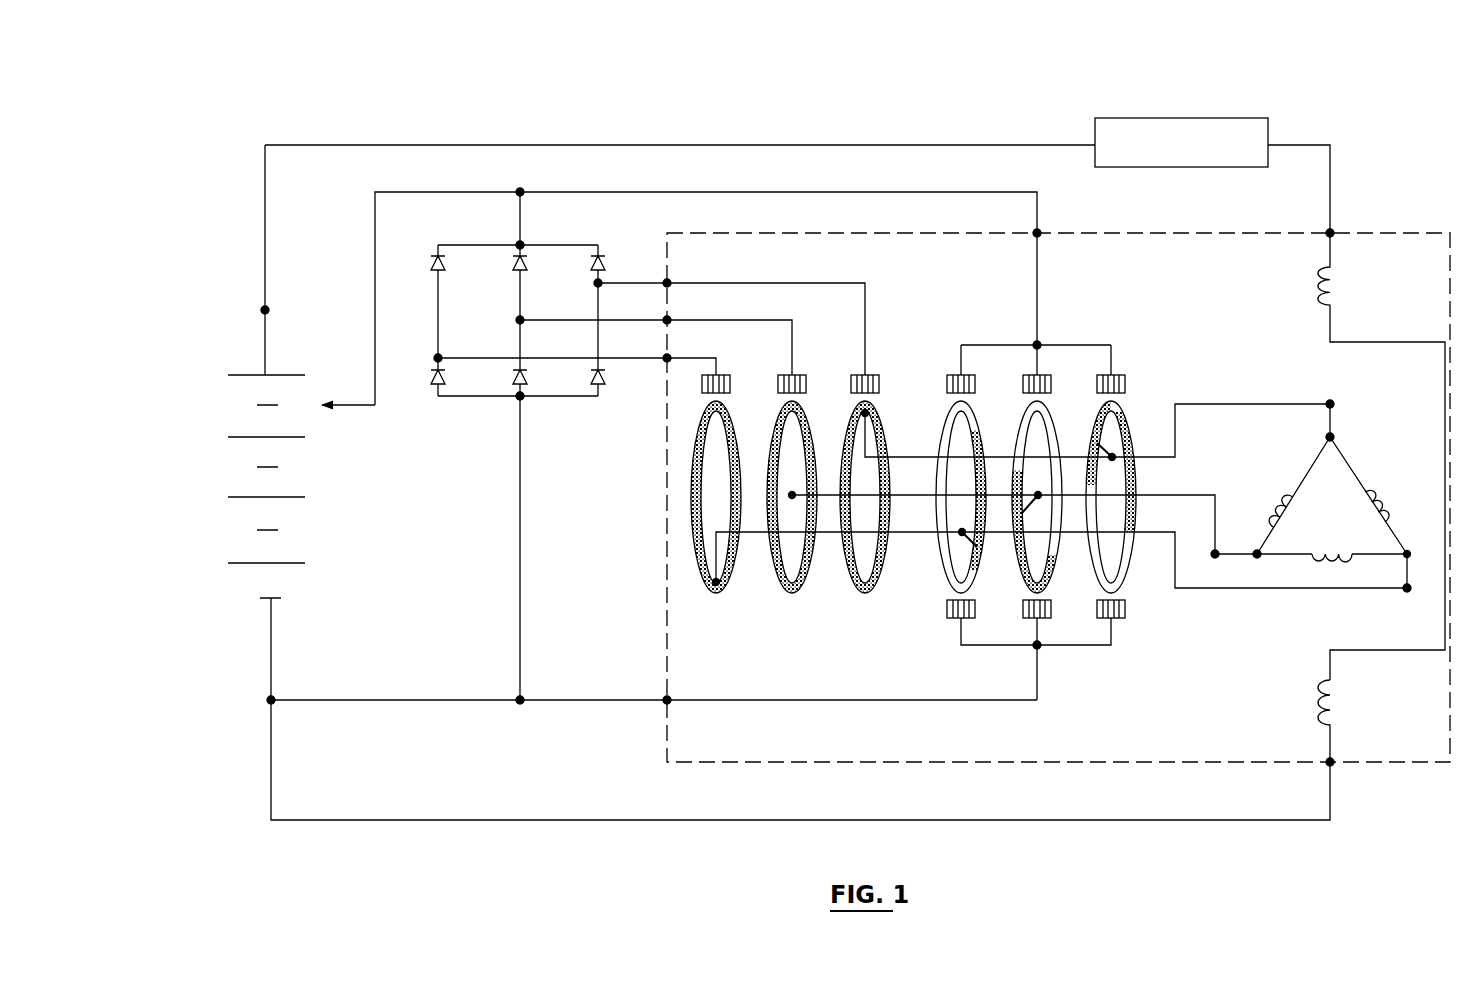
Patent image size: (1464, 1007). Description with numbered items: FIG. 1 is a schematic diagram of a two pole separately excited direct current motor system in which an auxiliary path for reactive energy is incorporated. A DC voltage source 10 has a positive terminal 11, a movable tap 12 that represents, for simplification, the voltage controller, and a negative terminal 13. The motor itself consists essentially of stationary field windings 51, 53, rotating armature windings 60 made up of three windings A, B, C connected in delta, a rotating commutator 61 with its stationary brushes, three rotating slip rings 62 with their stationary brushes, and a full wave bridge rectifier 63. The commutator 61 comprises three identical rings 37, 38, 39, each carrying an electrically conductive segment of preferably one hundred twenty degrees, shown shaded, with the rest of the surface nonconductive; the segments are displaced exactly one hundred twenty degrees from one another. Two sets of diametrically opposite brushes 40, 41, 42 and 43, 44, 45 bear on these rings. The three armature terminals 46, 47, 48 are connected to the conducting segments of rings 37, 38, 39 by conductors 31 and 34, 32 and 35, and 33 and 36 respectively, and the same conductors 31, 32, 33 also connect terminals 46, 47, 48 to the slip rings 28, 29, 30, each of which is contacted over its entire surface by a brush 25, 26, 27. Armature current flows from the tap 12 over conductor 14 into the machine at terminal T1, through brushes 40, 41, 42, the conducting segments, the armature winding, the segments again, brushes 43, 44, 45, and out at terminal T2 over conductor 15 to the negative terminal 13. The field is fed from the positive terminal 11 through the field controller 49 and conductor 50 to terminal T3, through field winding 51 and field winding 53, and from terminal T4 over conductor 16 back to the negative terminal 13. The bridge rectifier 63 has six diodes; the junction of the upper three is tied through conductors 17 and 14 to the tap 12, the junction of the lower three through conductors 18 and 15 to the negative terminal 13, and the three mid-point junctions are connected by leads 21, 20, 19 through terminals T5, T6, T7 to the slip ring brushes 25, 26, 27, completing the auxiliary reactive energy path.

The battery 10 is at (228, 370).
The positive terminal of the DC power source 11 is at (273, 307).
The movable tap 12 is at (329, 417).
The negative terminal of the DC voltage source 13 is at (279, 693).
The conductor 14 is at (436, 189).
The conductor 15 is at (404, 706).
The conductor 16 is at (411, 816).
The conductor 17 is at (524, 227).
The conductor 18 is at (529, 567).
The conductor 19 is at (445, 355).
The conductor 20 is at (515, 318).
The conductor 21 is at (594, 287).
The slip ring brush 25 is at (871, 374).
The slip ring brush 26 is at (797, 374).
The slip ring brush 27 is at (722, 374).
The slip ring 28 is at (890, 432).
The slip ring 29 is at (815, 432).
The slip ring 30 is at (740, 432).
The conductor 31 is at (1143, 461).
The conductor 32 is at (1143, 498).
The conductor 33 is at (1145, 536).
The conductor 34 is at (1108, 460).
The conductor 35 is at (1036, 494).
The conductor 36 is at (970, 532).
The commutator ring 37 is at (1142, 418).
The commutator ring 38 is at (1069, 418).
The commutator ring 39 is at (995, 418).
The brush 40 is at (1118, 374).
The brush 41 is at (1044, 374).
The brush 42 is at (968, 374).
The brush 43 is at (1122, 620).
The brush 44 is at (1047, 620).
The brush 45 is at (972, 620).
The armature winding terminal 46 is at (1339, 405).
The armature winding terminal 47 is at (1217, 561).
The armature winding terminal 48 is at (1408, 595).
The field controller 49 is at (766, 142).
The conductor 50 is at (1333, 190).
The stationary field winding 51 is at (1347, 288).
The stationary field winding 53 is at (1353, 699).
The rotating armature windings 60 is at (1266, 394).
The rotating commutator 61 is at (1058, 328).
The rotating slip rings 62 is at (879, 333).
The full wave bridge rectifier 63 is at (604, 237).
The terminal T1 is at (1046, 231).
The terminal T2 is at (665, 694).
The terminal T3 is at (1334, 228).
The terminal T4 is at (1337, 770).
The terminal T5 is at (670, 279).
The terminal T6 is at (670, 316).
The terminal T7 is at (670, 354).